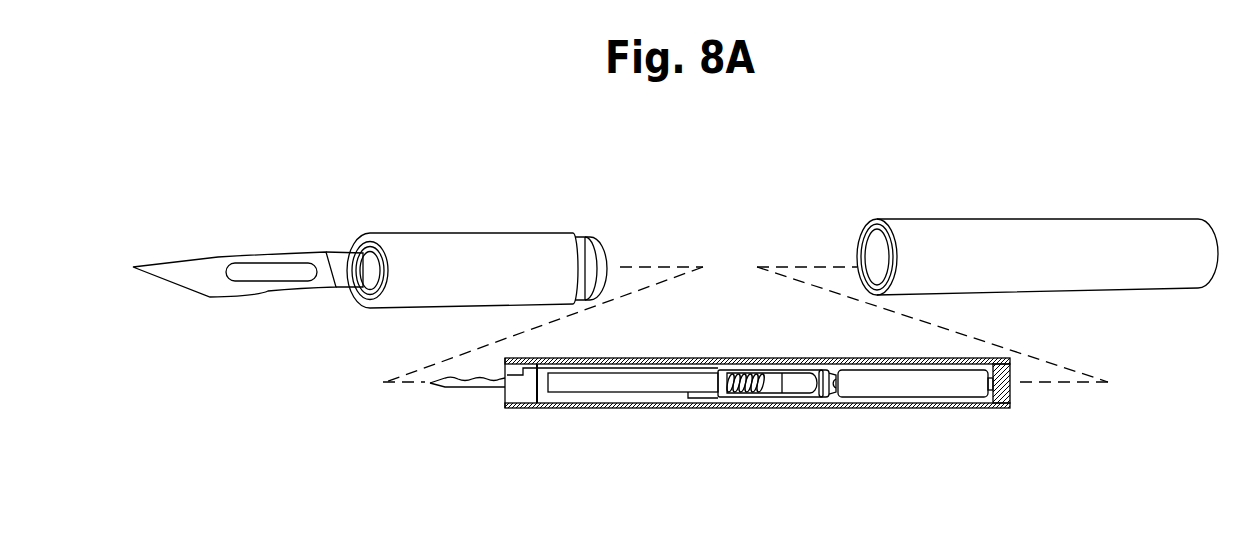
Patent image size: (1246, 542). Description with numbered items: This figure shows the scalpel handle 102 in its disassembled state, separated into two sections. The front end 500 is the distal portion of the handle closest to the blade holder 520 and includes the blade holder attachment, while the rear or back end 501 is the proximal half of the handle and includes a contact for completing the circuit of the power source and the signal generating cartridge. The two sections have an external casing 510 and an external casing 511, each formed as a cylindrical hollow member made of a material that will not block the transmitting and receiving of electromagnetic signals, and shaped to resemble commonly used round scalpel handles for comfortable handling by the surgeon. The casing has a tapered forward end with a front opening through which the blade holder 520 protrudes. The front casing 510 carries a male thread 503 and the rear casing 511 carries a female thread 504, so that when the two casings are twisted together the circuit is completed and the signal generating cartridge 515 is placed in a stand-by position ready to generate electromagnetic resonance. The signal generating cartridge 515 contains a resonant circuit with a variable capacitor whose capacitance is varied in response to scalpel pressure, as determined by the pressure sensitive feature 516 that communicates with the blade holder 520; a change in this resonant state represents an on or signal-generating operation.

The front end 500 is at (396, 222).
The external casing 510 is at (497, 232).
The male thread 503 is at (607, 255).
The female thread 504 is at (866, 248).
The external casing 511 is at (1088, 219).
The rear or back end 501 is at (1074, 302).
The blade holder 520 is at (369, 306).
The scalpel handle 102 is at (352, 404).
The pressure sensitive feature 516 is at (475, 386).
The signal generating cartridge 515 is at (768, 414).